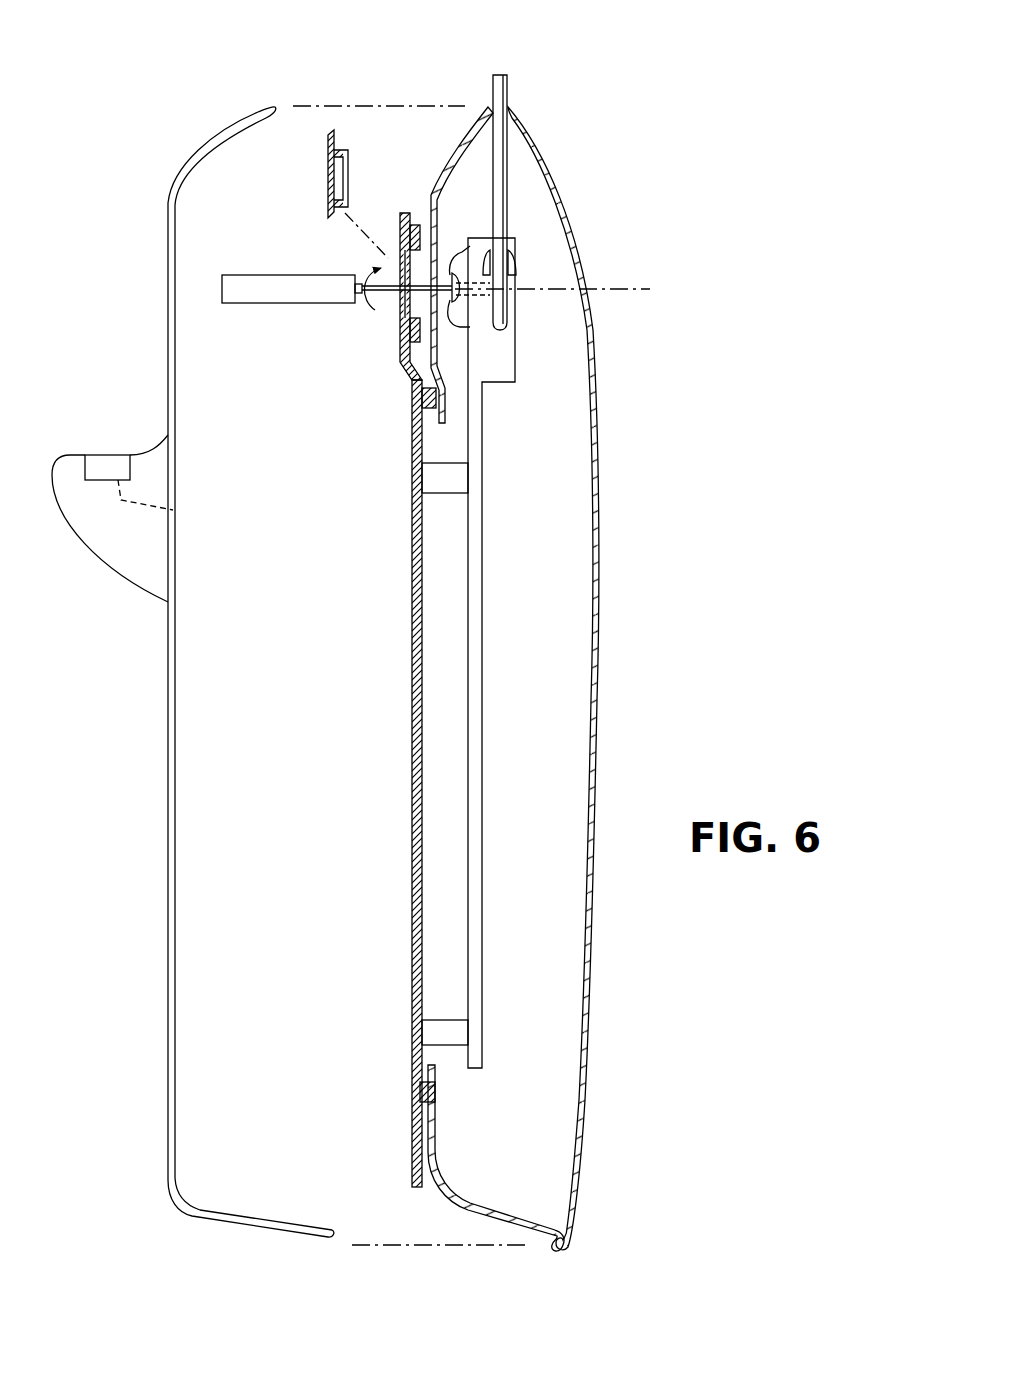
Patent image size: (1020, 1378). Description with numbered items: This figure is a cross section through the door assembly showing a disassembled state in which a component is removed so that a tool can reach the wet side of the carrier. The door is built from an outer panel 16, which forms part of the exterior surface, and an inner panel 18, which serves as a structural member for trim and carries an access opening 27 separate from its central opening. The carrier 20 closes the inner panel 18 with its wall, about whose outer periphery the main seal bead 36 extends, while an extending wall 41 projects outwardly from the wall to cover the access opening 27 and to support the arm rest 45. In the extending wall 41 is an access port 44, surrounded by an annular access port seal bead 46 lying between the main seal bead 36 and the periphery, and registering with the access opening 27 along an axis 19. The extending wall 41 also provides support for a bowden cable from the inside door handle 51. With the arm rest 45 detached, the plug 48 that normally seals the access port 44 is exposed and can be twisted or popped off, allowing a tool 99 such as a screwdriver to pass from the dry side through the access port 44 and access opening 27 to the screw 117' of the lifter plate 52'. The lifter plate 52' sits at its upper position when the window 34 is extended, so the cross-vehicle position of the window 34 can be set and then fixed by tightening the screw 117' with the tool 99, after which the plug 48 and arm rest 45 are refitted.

The outer panel 16 is at (600, 600).
The inner panel 18 is at (455, 138).
The axis 19 is at (617, 290).
The carrier module 20 is at (410, 905).
The access opening 27 is at (444, 274).
The window 34 is at (502, 93).
The main seal bead 36 is at (422, 398).
The extending wall 41 is at (400, 232).
The access port 44 is at (395, 272).
The arm rest 45 is at (92, 555).
The access port seal bead 46 is at (418, 242).
The plug 48 is at (330, 165).
The inside door handle 51 is at (110, 462).
The lifter plate 52' is at (569, 260).
The tool 99 is at (248, 300).
The screw 117' is at (567, 653).